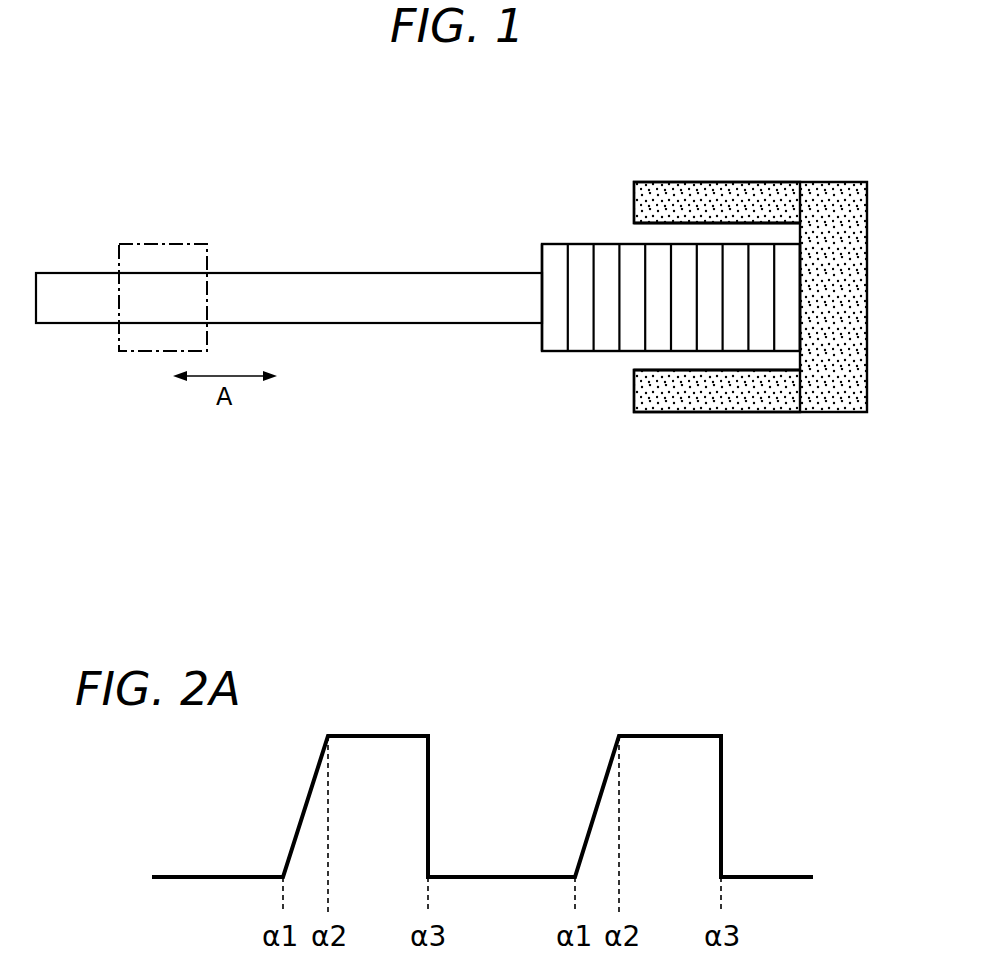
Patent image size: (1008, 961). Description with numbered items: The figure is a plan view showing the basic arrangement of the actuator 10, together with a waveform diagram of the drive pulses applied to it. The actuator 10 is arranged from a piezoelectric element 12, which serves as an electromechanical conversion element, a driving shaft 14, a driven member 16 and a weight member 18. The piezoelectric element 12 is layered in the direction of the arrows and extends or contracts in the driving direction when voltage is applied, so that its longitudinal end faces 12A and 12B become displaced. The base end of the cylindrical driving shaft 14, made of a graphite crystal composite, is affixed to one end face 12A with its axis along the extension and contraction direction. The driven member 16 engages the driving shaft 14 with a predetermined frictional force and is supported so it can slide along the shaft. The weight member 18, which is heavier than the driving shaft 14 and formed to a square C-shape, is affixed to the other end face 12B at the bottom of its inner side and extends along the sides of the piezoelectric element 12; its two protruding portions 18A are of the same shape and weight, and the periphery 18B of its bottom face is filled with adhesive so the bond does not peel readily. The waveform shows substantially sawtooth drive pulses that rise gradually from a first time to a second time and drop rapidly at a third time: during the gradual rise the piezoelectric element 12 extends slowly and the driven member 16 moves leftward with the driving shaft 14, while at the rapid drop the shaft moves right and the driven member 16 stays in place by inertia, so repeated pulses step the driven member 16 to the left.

The actuator 10 is at (462, 198).
The piezoelectric element 12 is at (578, 240).
The end face 12A is at (541, 342).
The end face 12B is at (802, 305).
The driving shaft 14 is at (333, 288).
The driven member 16 is at (173, 242).
The weight member 18 is at (840, 180).
The portions 18A is at (688, 192).
The periphery 18B is at (783, 226).